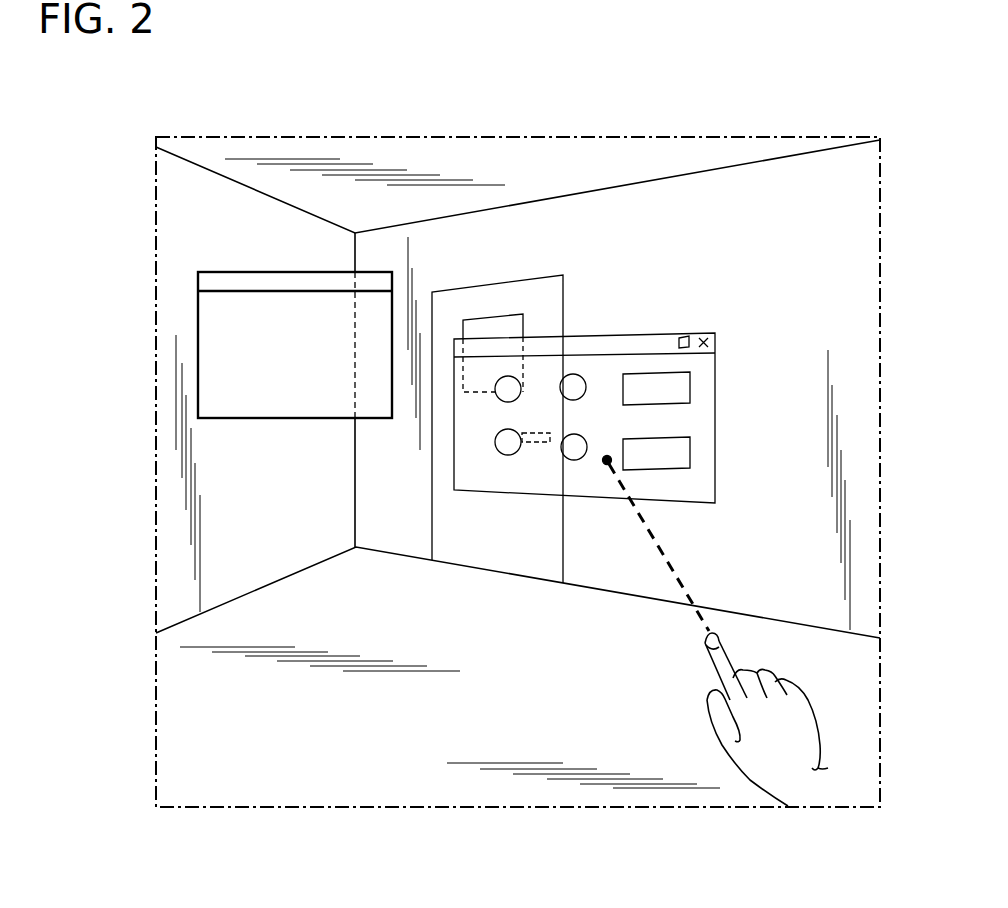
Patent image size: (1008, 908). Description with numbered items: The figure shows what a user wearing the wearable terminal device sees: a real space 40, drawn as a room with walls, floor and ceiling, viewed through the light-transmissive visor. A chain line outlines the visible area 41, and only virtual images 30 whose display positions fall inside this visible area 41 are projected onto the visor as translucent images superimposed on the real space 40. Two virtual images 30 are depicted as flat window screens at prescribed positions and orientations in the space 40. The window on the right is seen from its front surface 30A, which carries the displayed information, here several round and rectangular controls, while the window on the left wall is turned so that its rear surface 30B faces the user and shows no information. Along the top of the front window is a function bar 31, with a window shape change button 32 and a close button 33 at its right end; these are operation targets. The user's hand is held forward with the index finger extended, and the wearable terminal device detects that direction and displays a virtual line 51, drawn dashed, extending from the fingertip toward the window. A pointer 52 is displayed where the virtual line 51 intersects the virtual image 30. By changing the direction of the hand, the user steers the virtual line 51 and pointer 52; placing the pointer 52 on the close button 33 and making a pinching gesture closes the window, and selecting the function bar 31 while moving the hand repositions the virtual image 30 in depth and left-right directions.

The virtual image 30 is at (472, 377).
The front surface 30A is at (625, 377).
The rear surface 30B is at (312, 419).
The function bar 31 is at (627, 340).
The window shape change button 32 is at (685, 340).
The close button 33 is at (742, 314).
The space 40 is at (387, 159).
The visible area 41 is at (482, 137).
The virtual line 51 is at (670, 578).
The pointer 52 is at (604, 464).